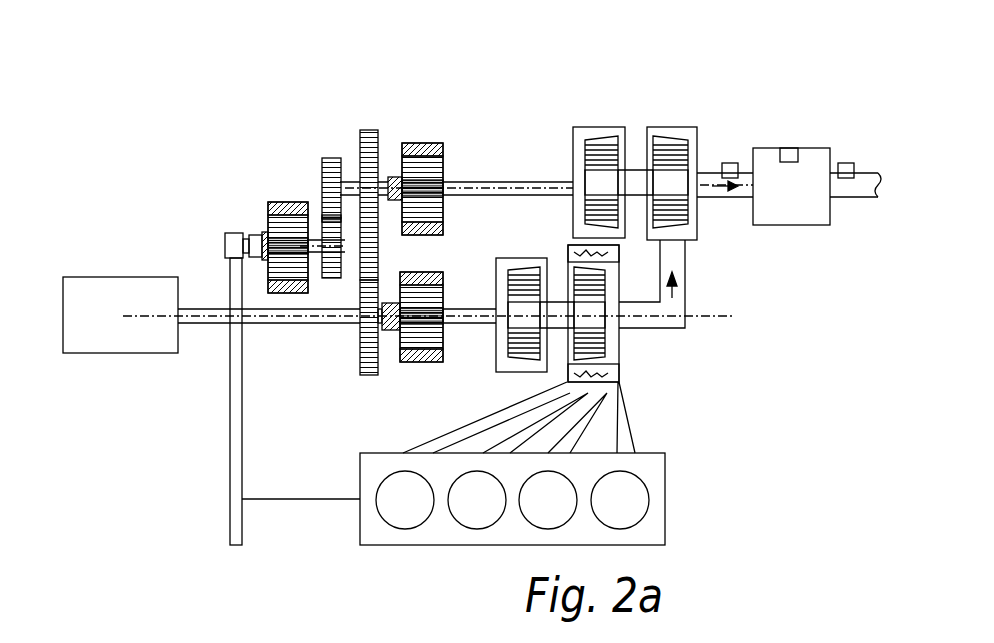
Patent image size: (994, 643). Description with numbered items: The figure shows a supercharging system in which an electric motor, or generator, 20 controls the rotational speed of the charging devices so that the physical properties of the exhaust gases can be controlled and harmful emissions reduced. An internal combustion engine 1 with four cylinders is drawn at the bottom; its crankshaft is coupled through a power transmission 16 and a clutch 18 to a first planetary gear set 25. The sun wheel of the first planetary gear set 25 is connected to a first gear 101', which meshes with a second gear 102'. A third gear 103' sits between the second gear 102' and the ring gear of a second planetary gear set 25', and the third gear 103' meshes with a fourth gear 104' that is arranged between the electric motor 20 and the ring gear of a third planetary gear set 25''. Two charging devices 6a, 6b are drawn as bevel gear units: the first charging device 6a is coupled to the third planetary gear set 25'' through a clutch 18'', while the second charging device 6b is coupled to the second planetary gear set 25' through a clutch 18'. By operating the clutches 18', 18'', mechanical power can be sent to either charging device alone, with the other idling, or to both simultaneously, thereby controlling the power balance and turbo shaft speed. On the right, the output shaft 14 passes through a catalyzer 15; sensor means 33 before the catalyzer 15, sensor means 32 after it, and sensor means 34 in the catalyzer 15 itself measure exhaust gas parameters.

The internal combustion engine 1 is at (440, 560).
The first charging device 6a is at (653, 345).
The second charging device 6b is at (714, 148).
The output shaft 14 is at (843, 190).
The catalyzer 15 is at (812, 198).
The power transmission 16 is at (230, 462).
The clutch 18 is at (235, 206).
The clutch 18' is at (411, 137).
The clutch 18'' is at (389, 362).
The electric motor, or generator 20 is at (113, 288).
The first planetary gear set 25 is at (273, 198).
The second planetary gear set 25' is at (445, 152).
The third planetary gear set 25'' is at (434, 346).
The sensor means 32 is at (846, 163).
The sensor means 33 is at (730, 163).
The sensor means 34 is at (790, 148).
The first gear 101' is at (283, 147).
The second gear 102' is at (341, 114).
The third gear 103' is at (383, 163).
The fourth gear 104' is at (330, 357).